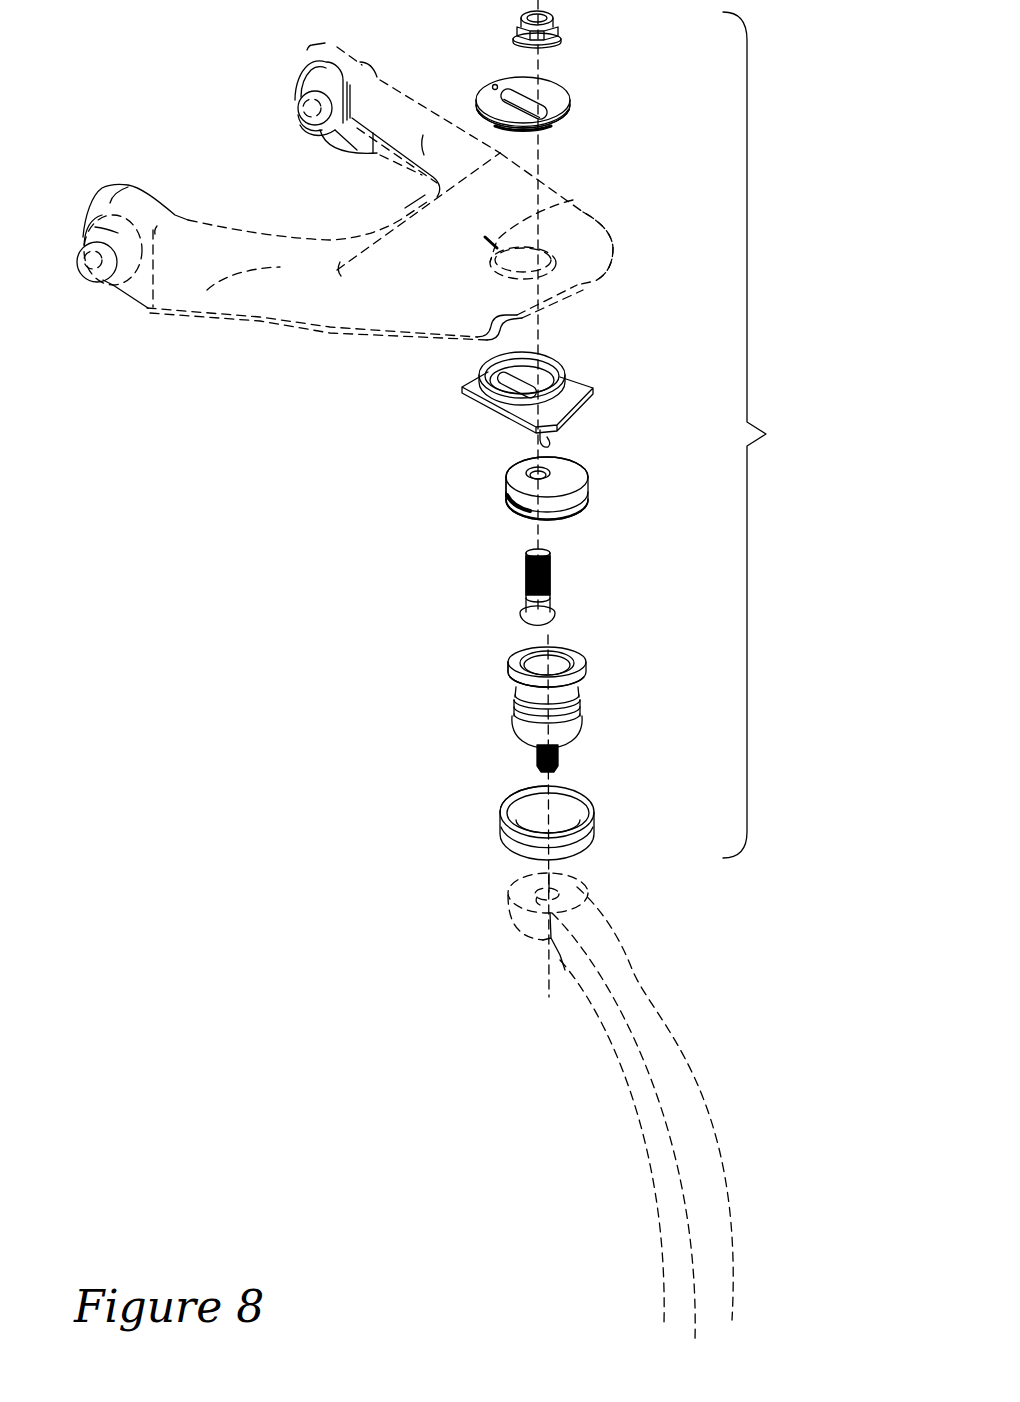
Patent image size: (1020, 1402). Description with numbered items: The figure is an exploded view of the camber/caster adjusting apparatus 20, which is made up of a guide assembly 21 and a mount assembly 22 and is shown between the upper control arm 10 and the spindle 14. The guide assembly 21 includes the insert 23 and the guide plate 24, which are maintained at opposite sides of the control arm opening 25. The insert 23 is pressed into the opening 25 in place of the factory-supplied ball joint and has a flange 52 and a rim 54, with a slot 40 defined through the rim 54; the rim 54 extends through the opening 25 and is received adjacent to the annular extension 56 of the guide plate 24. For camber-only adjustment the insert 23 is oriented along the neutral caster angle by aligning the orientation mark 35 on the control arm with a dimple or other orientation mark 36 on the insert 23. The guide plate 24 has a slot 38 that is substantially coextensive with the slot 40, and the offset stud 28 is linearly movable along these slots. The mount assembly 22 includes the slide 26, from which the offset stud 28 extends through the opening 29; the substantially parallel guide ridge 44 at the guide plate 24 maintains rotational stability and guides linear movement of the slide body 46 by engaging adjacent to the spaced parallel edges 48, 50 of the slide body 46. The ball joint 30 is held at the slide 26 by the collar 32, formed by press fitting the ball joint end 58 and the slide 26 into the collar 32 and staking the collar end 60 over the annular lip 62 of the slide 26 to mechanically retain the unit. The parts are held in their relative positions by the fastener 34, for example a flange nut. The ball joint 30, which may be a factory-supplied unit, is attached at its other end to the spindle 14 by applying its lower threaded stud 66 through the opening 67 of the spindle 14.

The upper control arm 10 is at (207, 290).
The spindle 14 is at (690, 1140).
The camber/caster adjusting apparatus 20 is at (770, 424).
The guide assembly 21 is at (422, 363).
The mount assembly 22 is at (427, 623).
The insert 23 is at (570, 108).
The guide plate 24 is at (470, 392).
The control arm opening 25 is at (603, 278).
The slide 26 is at (580, 481).
The offset stud 28 is at (552, 577).
The opening 29 is at (540, 465).
The ball joint 30 is at (588, 665).
The collar 32 is at (595, 821).
The fastener 34 is at (560, 22).
The orientation mark 35 is at (573, 200).
The orientation mark 36 is at (498, 84).
The slot 38 is at (515, 380).
The slot 40 is at (530, 98).
The guide ridge 44 is at (535, 438).
The slide body 46 is at (508, 482).
The edge 48 is at (545, 466).
The edge 50 is at (507, 505).
The flange 52 is at (571, 95).
The rim 54 is at (537, 135).
The annular extension 56 is at (567, 366).
The ball joint end 58 is at (510, 673).
The collar end 60 is at (503, 790).
The annular lip 62 is at (587, 494).
The lower threaded stud 66 is at (560, 757).
The opening 67 is at (515, 882).